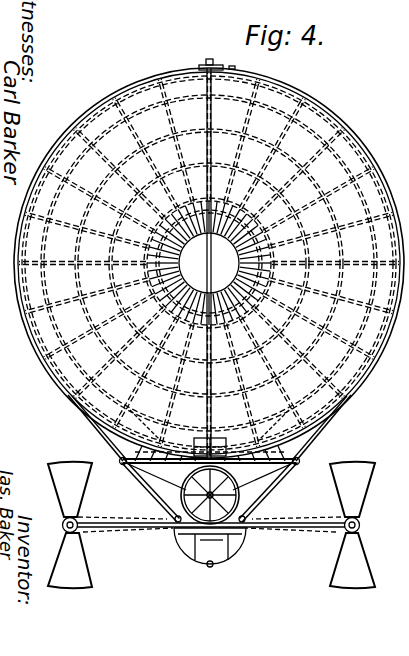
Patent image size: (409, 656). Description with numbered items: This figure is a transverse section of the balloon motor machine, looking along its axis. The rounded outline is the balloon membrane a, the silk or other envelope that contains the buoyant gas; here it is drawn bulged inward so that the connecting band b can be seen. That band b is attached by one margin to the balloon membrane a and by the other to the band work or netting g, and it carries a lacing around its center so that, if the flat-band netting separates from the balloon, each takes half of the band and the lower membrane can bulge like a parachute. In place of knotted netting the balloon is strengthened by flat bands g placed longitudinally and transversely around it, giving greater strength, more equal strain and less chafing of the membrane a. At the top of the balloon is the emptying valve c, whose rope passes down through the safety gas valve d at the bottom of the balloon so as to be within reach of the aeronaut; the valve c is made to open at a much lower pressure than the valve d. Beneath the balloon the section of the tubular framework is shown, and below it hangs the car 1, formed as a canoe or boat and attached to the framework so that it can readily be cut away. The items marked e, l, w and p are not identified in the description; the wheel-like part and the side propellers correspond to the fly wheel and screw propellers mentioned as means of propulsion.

The balloon membrane a is at (209, 263).
The connecting band b is at (210, 434).
The emptying valve c is at (217, 252).
The safety gas valve d is at (210, 440).
The netting cords e is at (209, 417).
The flat bands g is at (209, 428).
The struts l is at (210, 491).
The car 1 is at (210, 547).
The wheel w is at (210, 495).
The propeller shaft p is at (211, 525).